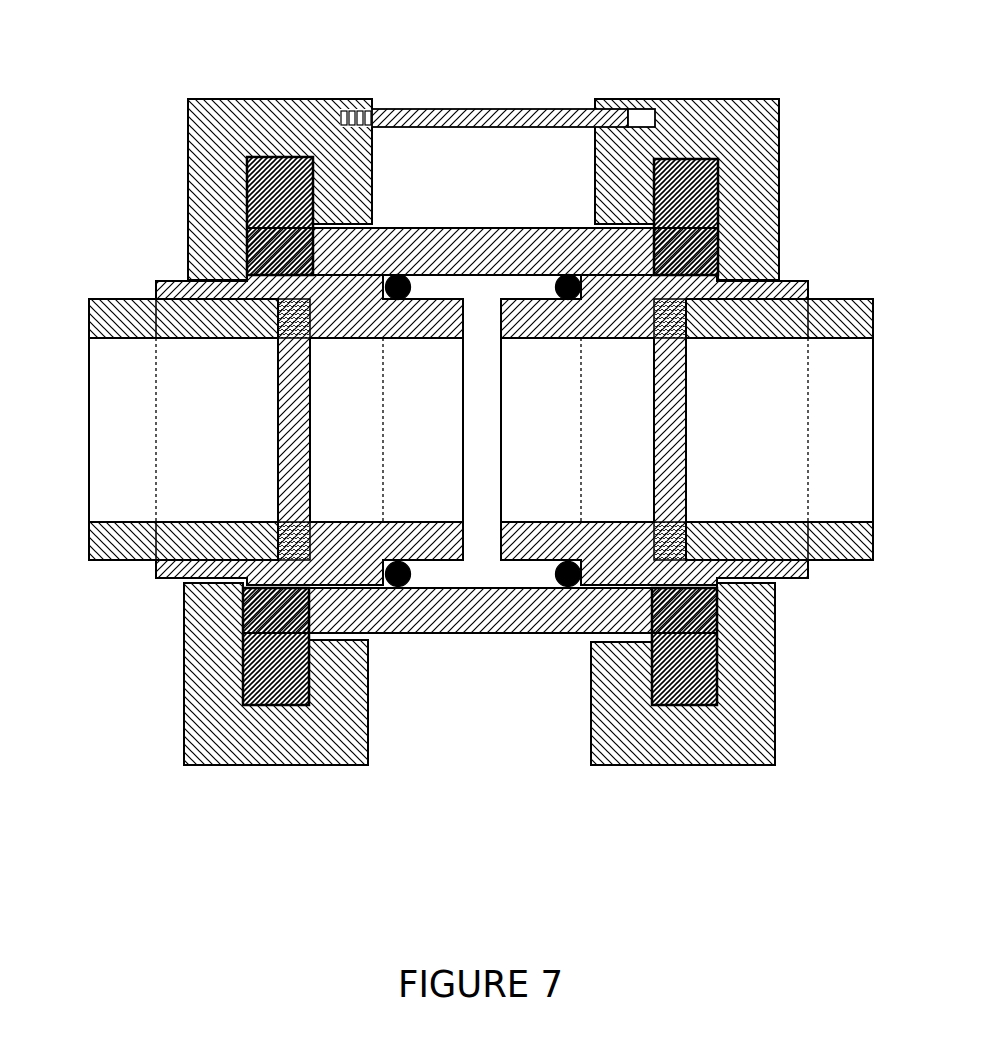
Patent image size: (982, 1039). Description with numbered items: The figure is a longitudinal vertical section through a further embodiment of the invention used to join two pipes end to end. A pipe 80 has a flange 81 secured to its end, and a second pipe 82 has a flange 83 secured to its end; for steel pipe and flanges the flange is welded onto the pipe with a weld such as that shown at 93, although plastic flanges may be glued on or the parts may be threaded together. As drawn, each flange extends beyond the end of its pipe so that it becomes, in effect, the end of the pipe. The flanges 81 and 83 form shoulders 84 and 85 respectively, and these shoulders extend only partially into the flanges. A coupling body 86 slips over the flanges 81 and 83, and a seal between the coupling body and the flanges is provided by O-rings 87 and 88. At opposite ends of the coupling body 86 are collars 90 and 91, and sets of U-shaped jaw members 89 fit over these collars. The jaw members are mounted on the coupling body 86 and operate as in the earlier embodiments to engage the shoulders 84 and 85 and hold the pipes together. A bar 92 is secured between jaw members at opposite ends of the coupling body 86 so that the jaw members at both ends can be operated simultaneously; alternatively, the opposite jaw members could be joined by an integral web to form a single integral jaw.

The pipe 80 is at (207, 320).
The flange 81 is at (242, 582).
The pipe 82 is at (747, 323).
The flange 83 is at (735, 591).
The shoulder 84 is at (250, 275).
The shoulder 85 is at (657, 285).
The coupling body 86 is at (527, 227).
The O-ring 87 is at (403, 586).
The O-ring 88 is at (562, 588).
The U-shaped jaw member 89 is at (212, 192).
The collar 90 is at (287, 180).
The collar 91 is at (688, 180).
The bar 92 is at (403, 108).
The weld 93 is at (290, 520).